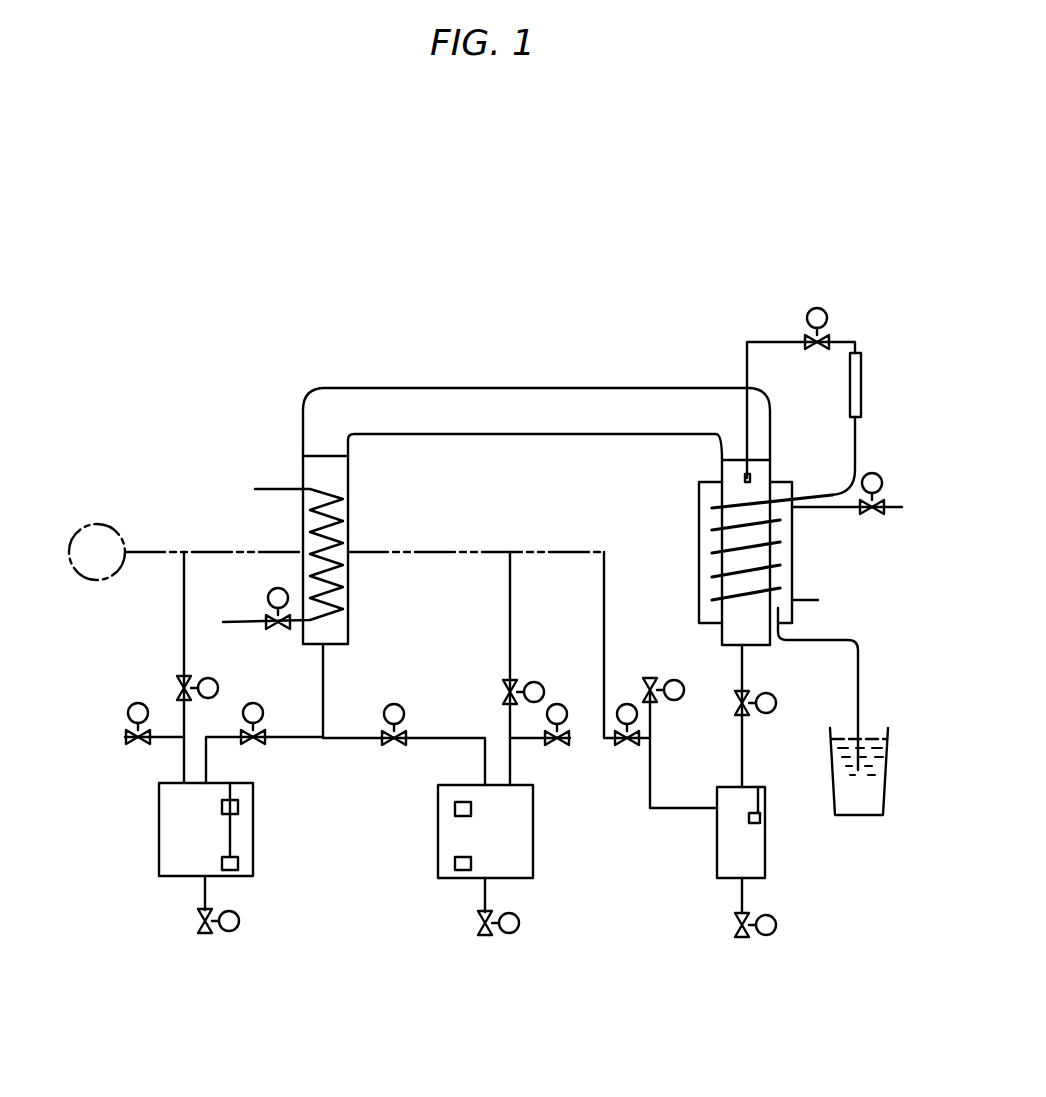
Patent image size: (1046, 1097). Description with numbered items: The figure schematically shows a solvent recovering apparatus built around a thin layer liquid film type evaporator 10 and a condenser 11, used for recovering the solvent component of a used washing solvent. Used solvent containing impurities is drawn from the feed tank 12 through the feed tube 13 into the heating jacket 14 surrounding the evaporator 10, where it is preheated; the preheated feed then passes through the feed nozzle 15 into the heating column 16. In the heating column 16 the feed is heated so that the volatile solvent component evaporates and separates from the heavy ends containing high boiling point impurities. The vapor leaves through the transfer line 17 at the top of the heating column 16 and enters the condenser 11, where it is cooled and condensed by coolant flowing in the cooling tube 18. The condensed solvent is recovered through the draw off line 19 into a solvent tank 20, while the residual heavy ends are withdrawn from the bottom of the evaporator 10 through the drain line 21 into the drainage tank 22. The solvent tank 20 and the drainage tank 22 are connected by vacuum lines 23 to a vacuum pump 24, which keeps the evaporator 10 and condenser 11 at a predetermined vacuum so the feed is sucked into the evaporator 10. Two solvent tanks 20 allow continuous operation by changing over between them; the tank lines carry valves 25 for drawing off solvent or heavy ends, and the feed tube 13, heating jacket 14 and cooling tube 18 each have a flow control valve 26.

The thin layer liquid film type evaporator 10 is at (697, 522).
The condenser 11 is at (356, 512).
The feed tank 12 is at (886, 793).
The feed tube 13 is at (858, 683).
The heating jacket 14 is at (792, 566).
The feed nozzle 15 is at (752, 476).
The heating column 16 is at (772, 528).
The transfer line 17 is at (580, 388).
The cooling tube 18 is at (343, 540).
The draw off line 19 is at (323, 686).
The solvent tank 20 is at (253, 842).
The drain line 21 is at (743, 665).
The drainage tank 22 is at (765, 850).
The vacuum line 23 is at (184, 635).
The vacuum pump 24 is at (113, 530).
The valve 25 is at (181, 683).
The flow control valve 26 is at (273, 628).